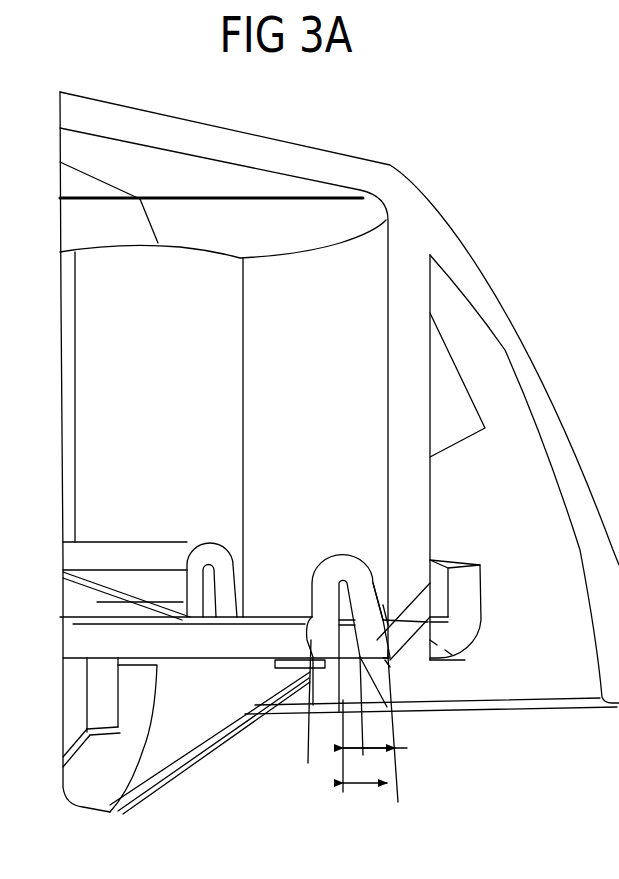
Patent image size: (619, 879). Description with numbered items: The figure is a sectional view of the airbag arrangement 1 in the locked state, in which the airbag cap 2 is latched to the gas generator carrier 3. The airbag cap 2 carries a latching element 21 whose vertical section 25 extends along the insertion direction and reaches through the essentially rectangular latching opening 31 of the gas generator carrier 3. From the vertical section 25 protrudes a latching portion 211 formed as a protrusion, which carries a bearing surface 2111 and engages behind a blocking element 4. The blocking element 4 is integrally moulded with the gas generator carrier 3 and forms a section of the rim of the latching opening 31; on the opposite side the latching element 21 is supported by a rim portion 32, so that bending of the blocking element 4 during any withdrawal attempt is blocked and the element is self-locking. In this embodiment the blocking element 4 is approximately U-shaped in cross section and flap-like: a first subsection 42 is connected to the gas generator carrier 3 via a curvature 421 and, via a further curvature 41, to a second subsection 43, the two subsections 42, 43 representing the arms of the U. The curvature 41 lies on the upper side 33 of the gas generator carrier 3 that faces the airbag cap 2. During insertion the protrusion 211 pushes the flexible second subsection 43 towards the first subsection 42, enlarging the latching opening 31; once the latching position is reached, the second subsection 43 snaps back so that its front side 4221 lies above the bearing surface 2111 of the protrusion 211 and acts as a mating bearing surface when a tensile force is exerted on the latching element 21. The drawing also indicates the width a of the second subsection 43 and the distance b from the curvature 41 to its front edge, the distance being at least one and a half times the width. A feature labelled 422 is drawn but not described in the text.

The airbag arrangement 1 is at (482, 208).
The airbag cap 2 is at (502, 322).
The gas generator carrier 3 is at (480, 694).
The blocking element 4 is at (396, 635).
The latching element 21 is at (292, 674).
The vertical section 25 is at (413, 640).
The latching opening 31 is at (433, 640).
The rim portion 32 is at (448, 650).
The upper side 33 is at (197, 620).
The curvature 41 is at (345, 563).
The first subsection 42 is at (320, 603).
The second subsection 43 is at (367, 595).
The latching portion 211 is at (392, 744).
The curvature 421 is at (303, 717).
The first leg inner edge 422 is at (385, 607).
The bearing surface 2111 is at (392, 645).
The front side 4221 is at (385, 667).